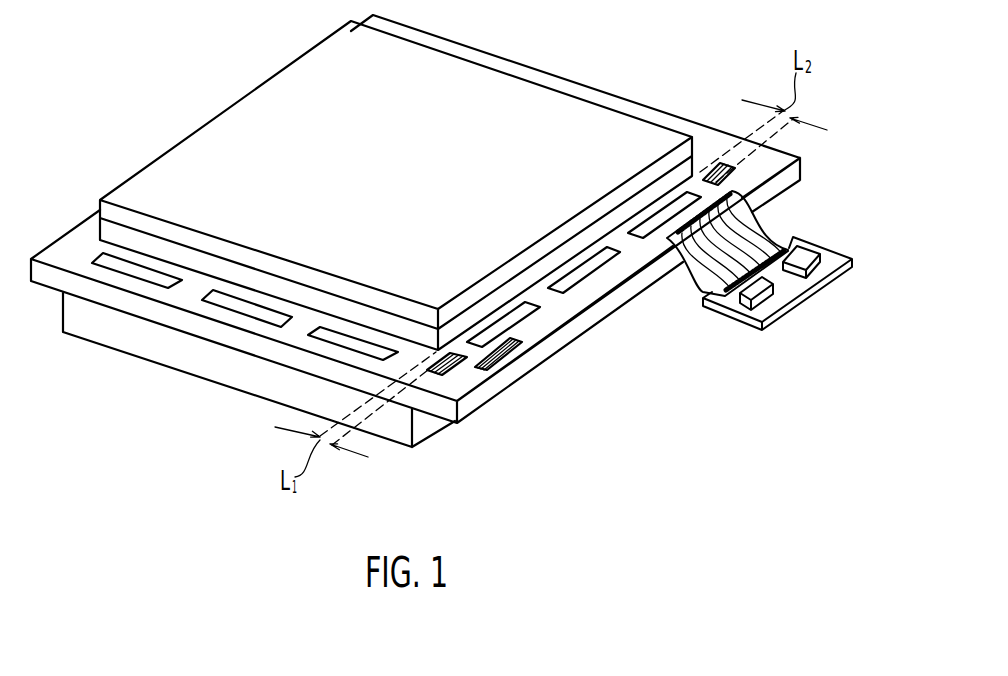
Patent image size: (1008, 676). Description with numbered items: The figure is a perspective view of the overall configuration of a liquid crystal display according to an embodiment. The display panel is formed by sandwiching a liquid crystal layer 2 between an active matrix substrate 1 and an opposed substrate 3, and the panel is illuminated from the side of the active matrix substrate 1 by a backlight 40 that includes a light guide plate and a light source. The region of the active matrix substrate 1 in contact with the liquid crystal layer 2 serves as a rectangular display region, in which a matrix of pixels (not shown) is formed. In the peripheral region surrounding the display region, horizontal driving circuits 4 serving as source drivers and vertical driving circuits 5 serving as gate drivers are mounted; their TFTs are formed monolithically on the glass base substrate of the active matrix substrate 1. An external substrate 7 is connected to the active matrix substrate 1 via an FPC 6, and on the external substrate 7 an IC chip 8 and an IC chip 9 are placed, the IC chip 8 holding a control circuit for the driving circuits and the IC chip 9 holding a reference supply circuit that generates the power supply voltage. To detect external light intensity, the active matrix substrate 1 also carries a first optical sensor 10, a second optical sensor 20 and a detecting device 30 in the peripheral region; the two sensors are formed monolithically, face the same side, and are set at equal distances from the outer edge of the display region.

The active matrix substrate 1 is at (38, 252).
The liquid crystal layer 2 is at (99, 236).
The opposed substrate 3 is at (100, 207).
The horizontal driving circuits 4 is at (353, 345).
The vertical driving circuits 5 is at (515, 320).
The FPC 6 is at (770, 236).
The external substrate 7 is at (843, 252).
The IC chip 8 is at (740, 303).
The IC chip 9 is at (815, 243).
The first optical sensor 10 is at (465, 366).
The second optical sensor 20 is at (743, 137).
The detecting device 30 is at (512, 358).
The backlight 40 is at (92, 330).